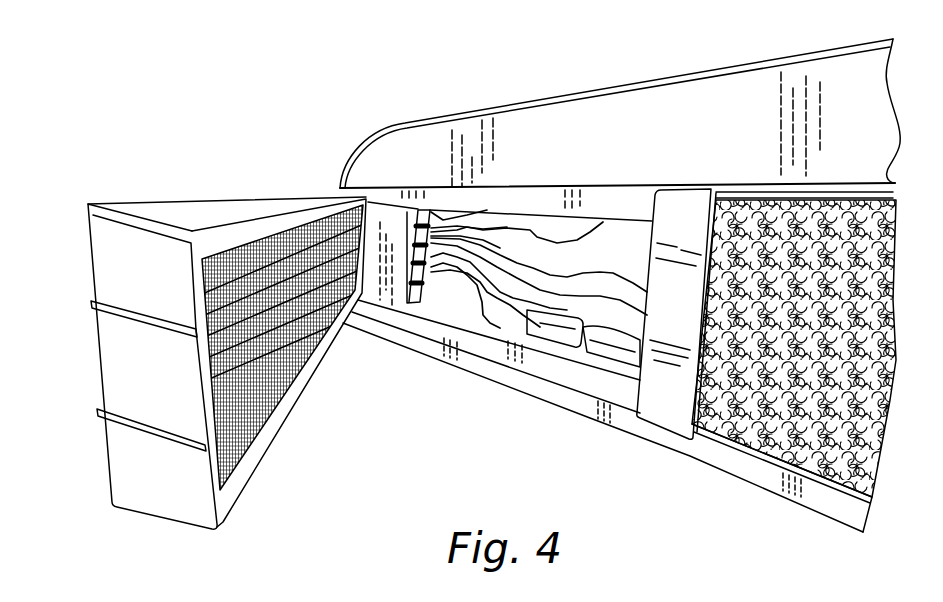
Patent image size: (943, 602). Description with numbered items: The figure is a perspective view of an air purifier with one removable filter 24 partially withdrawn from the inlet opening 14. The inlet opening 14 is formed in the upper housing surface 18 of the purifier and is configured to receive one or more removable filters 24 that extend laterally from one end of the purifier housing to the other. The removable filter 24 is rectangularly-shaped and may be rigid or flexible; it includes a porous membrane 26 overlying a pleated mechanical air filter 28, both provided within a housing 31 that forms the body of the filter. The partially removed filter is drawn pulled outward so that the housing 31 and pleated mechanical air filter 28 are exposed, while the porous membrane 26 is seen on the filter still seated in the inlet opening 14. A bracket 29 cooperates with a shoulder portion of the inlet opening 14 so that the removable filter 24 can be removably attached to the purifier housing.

The inlet opening 14 is at (605, 222).
The upper housing surface 18 is at (542, 142).
The removable filter 24 is at (197, 192).
The porous membrane 26 is at (768, 409).
The pleated mechanical air filter 28 is at (310, 253).
The bracket 29 is at (693, 213).
The housing 31 is at (107, 272).